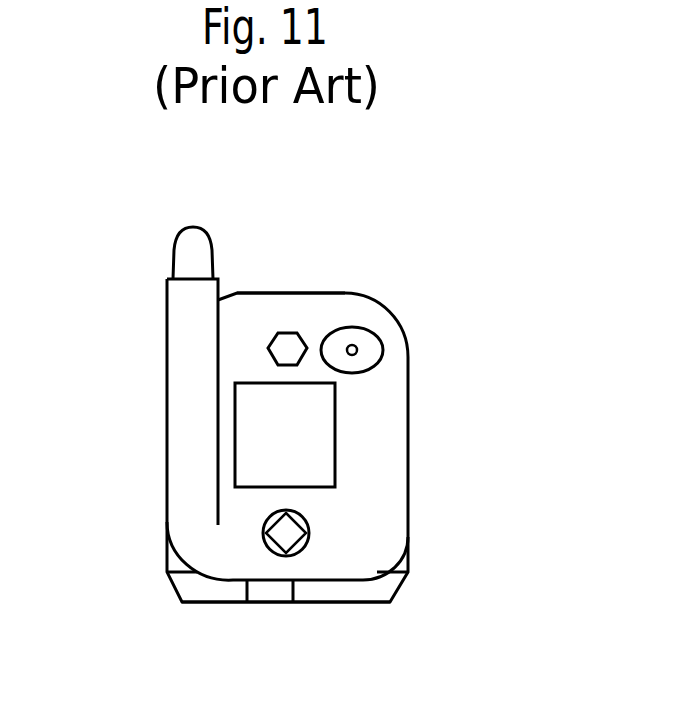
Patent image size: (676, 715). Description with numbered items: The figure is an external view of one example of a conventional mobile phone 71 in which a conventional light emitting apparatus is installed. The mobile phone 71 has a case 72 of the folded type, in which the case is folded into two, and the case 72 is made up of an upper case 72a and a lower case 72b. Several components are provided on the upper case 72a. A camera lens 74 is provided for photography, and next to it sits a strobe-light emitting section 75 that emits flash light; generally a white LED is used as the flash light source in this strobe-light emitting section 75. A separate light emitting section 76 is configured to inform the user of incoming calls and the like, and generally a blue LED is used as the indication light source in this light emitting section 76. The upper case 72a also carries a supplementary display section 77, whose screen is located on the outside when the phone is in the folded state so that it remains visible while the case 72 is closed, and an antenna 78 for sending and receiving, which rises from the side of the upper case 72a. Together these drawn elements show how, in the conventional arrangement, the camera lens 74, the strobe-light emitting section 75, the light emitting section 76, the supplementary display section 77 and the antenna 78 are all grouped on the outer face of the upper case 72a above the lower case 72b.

The mobile phone 71 is at (408, 283).
The case 72 is at (408, 433).
The upper case 72a is at (335, 293).
The lower case 72b is at (406, 563).
The camera lens 74 is at (357, 347).
The strobe-light emitting section 75 is at (283, 333).
The light emitting section 76 is at (283, 548).
The supplementary display section 77 is at (325, 455).
The antenna 78 is at (178, 252).